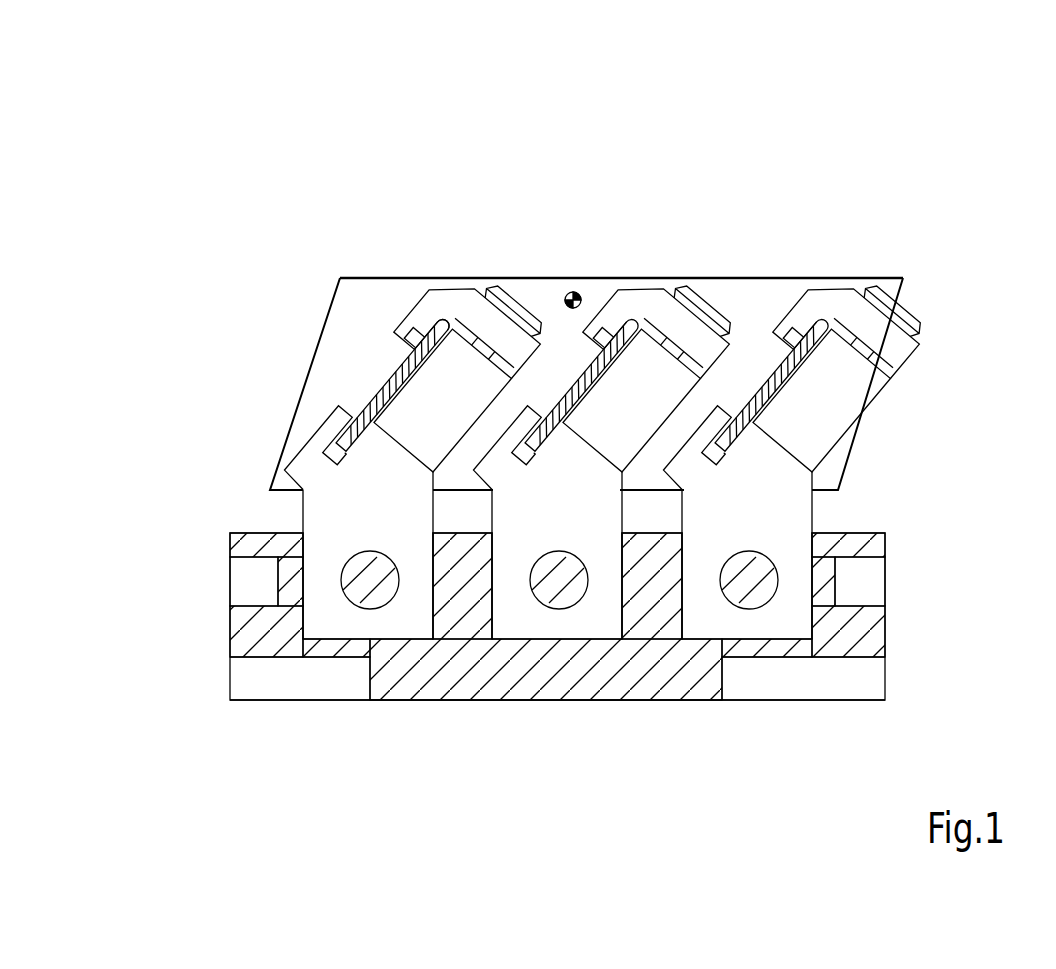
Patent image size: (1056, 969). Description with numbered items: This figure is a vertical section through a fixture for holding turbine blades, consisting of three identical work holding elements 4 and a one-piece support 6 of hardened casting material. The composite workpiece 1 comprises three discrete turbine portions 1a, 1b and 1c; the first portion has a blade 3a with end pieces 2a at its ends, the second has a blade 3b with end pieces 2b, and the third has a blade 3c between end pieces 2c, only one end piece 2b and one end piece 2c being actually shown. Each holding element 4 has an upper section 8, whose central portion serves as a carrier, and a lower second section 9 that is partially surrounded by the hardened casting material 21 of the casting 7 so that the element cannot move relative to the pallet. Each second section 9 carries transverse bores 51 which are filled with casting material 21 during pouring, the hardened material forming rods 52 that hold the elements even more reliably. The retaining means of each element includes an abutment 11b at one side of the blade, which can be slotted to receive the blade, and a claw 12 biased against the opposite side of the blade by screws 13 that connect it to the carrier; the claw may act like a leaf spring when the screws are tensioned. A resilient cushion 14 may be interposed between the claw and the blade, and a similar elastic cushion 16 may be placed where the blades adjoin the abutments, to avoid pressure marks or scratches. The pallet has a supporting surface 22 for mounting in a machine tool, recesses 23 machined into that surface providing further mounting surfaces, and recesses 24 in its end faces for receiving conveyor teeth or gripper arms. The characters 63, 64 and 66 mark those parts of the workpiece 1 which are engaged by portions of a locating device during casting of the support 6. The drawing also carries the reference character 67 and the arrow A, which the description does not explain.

The composite workpiece 1 is at (383, 178).
The first workpiece portion 1a is at (366, 386).
The second workpiece portion 1b is at (549, 390).
The third workpiece portion 1c is at (765, 357).
The end pieces 2a is at (408, 290).
The end pieces 2b is at (598, 300).
The end pieces 2c is at (790, 300).
The blade 3a is at (385, 390).
The blade 3b is at (573, 398).
The blade 3c is at (757, 400).
The work holding element 4 is at (422, 644).
The one-piece support 6 is at (976, 534).
The casting 7 is at (888, 628).
The upper section 8 is at (467, 388).
The second section 9 is at (428, 612).
The abutment 11b is at (330, 418).
The claw 12 is at (449, 300).
The screw 13 is at (512, 292).
The resilient cushion 14 is at (403, 313).
The elastic cushion 16 is at (340, 414).
The hardened casting material 21 is at (584, 692).
The supporting surface 22 is at (393, 703).
The recesses 23 is at (262, 682).
The recesses 24 is at (252, 580).
The bores 51 is at (355, 552).
The rods 52 is at (378, 572).
The engaged workpiece part 63 is at (419, 330).
The engaged workpiece part 64 is at (437, 318).
The engaged workpiece part 66 is at (573, 291).
The pressing point 67 is at (815, 318).
The direction of view A is at (196, 486).